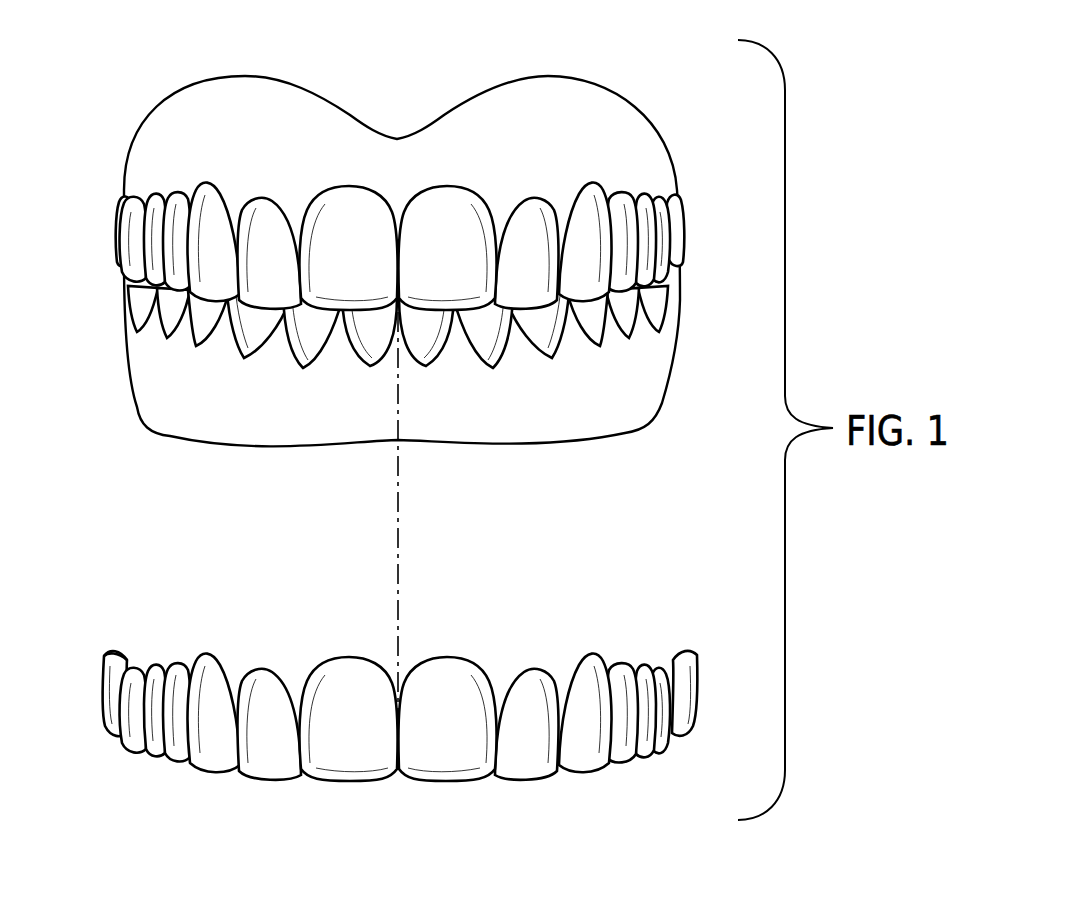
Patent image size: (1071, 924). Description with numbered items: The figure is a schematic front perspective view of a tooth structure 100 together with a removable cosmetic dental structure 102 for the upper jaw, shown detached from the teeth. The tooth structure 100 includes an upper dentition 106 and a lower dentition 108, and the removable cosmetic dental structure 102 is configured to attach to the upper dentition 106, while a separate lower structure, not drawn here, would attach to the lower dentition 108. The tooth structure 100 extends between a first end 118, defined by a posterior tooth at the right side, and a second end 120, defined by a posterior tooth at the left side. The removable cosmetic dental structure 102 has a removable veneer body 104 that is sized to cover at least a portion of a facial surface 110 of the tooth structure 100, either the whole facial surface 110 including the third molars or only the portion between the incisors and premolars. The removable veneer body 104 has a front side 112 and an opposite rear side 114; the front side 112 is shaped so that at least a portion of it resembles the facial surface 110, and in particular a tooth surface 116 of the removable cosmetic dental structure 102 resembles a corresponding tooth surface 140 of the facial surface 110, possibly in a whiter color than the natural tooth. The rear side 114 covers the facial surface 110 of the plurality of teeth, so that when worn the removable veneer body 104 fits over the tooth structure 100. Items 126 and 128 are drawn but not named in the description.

The tooth structure 100 is at (689, 220).
The removable cosmetic dental structure 102 is at (700, 646).
The removable veneer body 104 is at (577, 739).
The upper dentition 106 is at (122, 232).
The lower dentition 108 is at (131, 304).
The facial surface 110 is at (592, 186).
The front side 112 is at (116, 711).
The rear side 114 is at (112, 655).
The tooth surface 116 is at (262, 688).
The first end 118 is at (120, 308).
The second end 120 is at (688, 247).
The aligner left side 126 is at (103, 738).
The aligner right side 128 is at (701, 720).
The tooth surface 140 is at (261, 219).